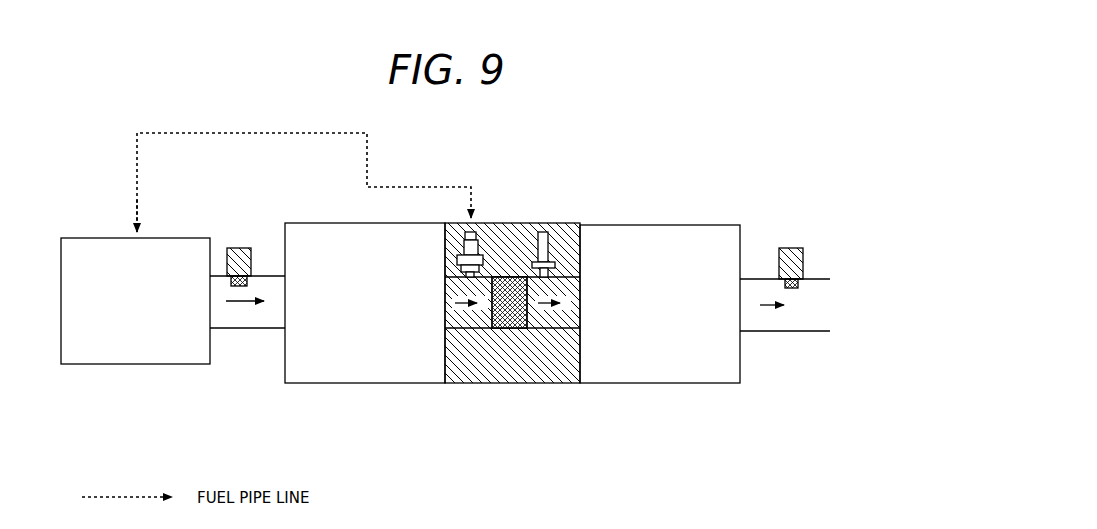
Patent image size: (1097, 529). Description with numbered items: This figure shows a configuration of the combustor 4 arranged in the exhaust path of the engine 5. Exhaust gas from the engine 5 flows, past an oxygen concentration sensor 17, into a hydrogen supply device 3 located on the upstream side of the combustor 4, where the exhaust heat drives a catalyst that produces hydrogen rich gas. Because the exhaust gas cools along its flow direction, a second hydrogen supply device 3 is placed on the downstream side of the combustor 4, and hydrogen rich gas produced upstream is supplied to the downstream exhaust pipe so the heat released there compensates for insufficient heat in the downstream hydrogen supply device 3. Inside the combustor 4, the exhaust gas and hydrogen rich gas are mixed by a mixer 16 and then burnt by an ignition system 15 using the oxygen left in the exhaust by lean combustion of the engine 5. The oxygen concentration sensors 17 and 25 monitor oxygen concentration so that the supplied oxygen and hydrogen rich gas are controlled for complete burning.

The hydrogen supply device 3 is at (365, 372).
The combustor 4 is at (480, 380).
The engine 5 is at (138, 358).
The ignition system 15 is at (558, 225).
The mixer 16 is at (524, 322).
The oxygen concentration sensor 17 is at (240, 248).
The oxygen concentration sensor 25 is at (790, 248).